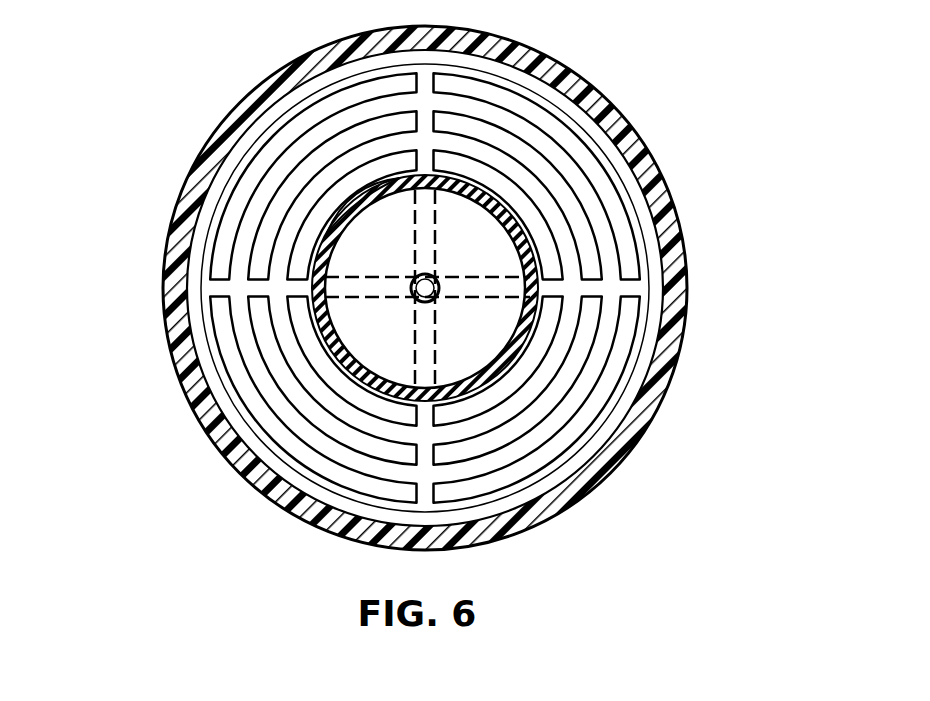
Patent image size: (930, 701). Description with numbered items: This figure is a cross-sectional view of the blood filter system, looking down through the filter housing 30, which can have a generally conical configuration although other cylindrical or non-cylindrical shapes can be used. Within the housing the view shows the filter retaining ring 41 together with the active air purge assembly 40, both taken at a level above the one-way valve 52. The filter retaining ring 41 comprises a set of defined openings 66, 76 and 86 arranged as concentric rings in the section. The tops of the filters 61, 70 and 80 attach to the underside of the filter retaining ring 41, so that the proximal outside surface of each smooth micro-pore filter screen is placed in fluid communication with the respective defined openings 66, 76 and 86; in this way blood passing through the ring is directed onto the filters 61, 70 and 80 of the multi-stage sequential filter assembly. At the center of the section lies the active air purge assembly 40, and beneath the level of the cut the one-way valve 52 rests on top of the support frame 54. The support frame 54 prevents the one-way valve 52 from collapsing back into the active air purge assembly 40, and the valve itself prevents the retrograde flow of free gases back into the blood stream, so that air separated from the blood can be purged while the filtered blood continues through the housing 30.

The filter housing 30 is at (217, 115).
The filter retaining ring 41 is at (663, 295).
The filter 61 is at (553, 52).
The filter 70 is at (600, 83).
The filter 80 is at (637, 125).
The defined opening 86 is at (215, 443).
The defined opening 76 is at (265, 370).
The defined opening 66 is at (297, 358).
The active air purge assembly 40 is at (330, 318).
The one-way valve 52 is at (363, 240).
The support frame 54 is at (487, 280).